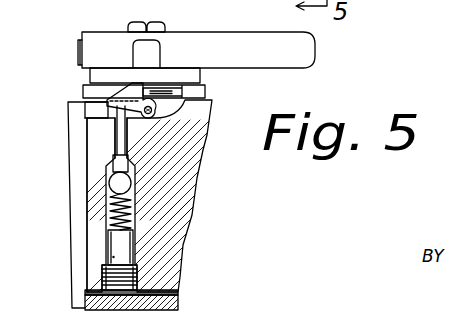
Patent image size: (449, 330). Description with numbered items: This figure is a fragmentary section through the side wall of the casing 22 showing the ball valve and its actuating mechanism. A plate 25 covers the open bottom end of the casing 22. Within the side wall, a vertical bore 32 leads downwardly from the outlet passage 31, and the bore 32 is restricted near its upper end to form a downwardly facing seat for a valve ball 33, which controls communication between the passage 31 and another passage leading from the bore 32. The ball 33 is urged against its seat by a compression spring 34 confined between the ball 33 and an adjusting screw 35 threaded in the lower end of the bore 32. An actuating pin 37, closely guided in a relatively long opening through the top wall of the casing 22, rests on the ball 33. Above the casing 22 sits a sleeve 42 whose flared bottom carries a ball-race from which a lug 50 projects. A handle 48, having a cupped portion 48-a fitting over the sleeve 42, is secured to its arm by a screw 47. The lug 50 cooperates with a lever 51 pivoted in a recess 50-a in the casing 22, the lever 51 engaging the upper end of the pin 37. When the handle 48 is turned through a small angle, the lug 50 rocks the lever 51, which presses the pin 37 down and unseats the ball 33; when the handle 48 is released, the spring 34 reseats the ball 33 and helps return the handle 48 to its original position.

The casing 22 is at (200, 172).
The plate 25 is at (178, 303).
The outlet passage 31 is at (113, 156).
The vertical bore 32 is at (136, 238).
The valve ball 33 is at (108, 183).
The compression spring 34 is at (133, 214).
The adjusting screw 35 is at (138, 277).
The actuating pin 37 is at (128, 119).
The sleeve 42 is at (90, 78).
The screw 47 is at (146, 26).
The handle 48 is at (316, 57).
The cupped portion 48-a is at (80, 50).
The lug 50 is at (182, 86).
The recess 50-a is at (93, 108).
The lever 51 is at (141, 84).